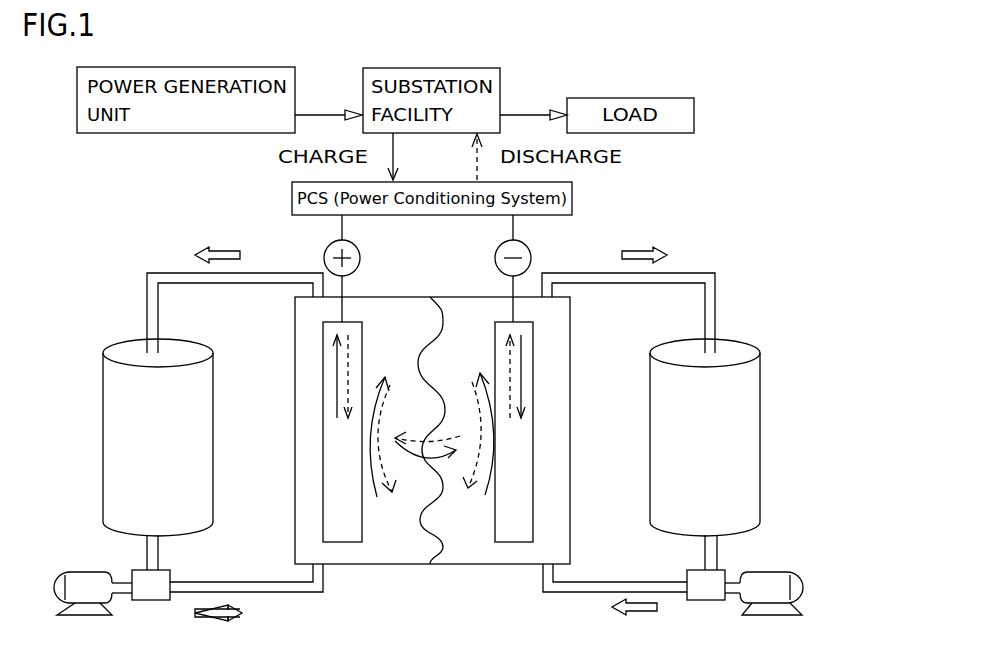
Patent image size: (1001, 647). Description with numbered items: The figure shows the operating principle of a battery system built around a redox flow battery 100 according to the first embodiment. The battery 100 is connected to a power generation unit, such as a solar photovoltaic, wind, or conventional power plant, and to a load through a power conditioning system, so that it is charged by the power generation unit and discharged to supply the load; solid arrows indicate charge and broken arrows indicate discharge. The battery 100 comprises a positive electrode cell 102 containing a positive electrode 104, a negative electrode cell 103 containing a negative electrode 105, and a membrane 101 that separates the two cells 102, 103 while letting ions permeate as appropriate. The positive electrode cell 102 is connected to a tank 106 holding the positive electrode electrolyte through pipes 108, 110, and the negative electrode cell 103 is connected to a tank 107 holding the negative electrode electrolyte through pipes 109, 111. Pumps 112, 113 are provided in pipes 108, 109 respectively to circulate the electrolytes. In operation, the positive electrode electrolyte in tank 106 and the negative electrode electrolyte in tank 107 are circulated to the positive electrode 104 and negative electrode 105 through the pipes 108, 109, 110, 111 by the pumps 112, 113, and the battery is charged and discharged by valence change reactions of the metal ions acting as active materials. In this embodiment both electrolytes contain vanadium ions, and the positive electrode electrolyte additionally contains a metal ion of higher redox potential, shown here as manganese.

The redox flow battery 100 is at (406, 295).
The membrane 101 is at (430, 566).
The positive electrode cell 102 is at (370, 566).
The negative electrode cell 103 is at (500, 566).
The positive electrode 104 is at (323, 485).
The negative electrode 105 is at (533, 462).
The tank for positive electrode electrolyte 106 is at (113, 343).
The tank for negative electrode electrolyte 107 is at (748, 343).
The pipe 108 is at (284, 594).
The pipe 109 is at (597, 582).
The pipe 110 is at (175, 272).
The pipe 111 is at (698, 272).
The pump 112 is at (80, 570).
The pump 113 is at (773, 570).